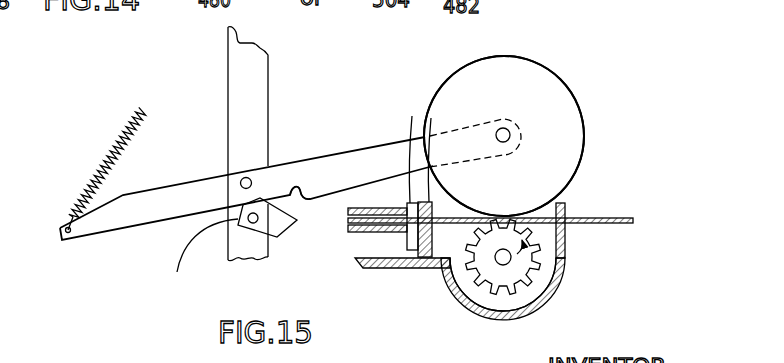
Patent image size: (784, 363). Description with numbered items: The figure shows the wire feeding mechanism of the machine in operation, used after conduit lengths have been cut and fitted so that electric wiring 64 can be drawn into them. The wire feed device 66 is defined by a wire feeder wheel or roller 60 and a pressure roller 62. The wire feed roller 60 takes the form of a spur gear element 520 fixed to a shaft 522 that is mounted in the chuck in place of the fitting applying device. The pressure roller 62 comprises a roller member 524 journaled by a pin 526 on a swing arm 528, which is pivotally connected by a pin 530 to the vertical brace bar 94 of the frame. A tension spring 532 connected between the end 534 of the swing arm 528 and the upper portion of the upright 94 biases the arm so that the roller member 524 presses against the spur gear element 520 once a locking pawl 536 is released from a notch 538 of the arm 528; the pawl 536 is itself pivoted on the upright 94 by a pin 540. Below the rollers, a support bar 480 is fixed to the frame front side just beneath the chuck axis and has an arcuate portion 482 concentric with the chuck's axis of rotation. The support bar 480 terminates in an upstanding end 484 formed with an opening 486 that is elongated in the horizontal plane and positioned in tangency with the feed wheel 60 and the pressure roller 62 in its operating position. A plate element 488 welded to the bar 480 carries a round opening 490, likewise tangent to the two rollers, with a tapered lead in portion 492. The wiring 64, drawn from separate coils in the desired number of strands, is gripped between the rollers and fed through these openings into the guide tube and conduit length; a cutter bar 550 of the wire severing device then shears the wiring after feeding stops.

The vertical brace bar 94 is at (262, 100).
The wire feeder wheel 60 is at (542, 284).
The pressure roller 62 is at (537, 50).
The wiring 64 is at (627, 231).
The wire feed device 66 is at (624, 134).
The support bar 480 is at (385, 268).
The arcuate portion 482 is at (548, 300).
The upstanding end 484 is at (566, 247).
The opening 486 is at (577, 217).
The plate element 488 is at (433, 270).
The opening 490 is at (447, 215).
The tapered lead in portion 492 is at (432, 228).
The spur gear element 520 is at (513, 288).
The shaft 522 is at (501, 264).
The roller member 524 is at (545, 93).
The pin 526 is at (497, 131).
The swing arm 528 is at (370, 153).
The pin 530 is at (252, 180).
The tension spring 532 is at (100, 162).
The end of swing arm 534 is at (100, 218).
The locking pawl 536 is at (263, 232).
The notch 538 is at (347, 190).
The pin 540 is at (192, 259).
The cutter bar 550 is at (410, 174).